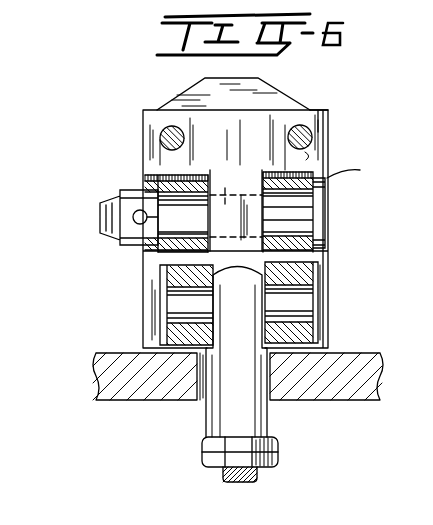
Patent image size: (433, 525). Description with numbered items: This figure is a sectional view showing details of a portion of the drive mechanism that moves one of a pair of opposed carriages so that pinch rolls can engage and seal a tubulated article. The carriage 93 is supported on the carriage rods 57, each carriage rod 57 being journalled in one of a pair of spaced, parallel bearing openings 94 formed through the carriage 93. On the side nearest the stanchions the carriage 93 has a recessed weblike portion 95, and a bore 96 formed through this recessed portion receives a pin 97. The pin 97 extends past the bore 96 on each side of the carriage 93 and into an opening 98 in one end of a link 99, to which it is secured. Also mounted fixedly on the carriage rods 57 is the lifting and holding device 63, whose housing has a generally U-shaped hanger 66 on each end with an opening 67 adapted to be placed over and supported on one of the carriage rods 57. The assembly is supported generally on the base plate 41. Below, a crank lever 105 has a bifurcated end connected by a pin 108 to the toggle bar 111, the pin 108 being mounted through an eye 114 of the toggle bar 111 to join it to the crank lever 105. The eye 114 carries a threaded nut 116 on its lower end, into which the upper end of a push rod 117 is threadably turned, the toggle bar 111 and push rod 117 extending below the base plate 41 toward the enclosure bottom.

The base plate 41 is at (352, 385).
The carriage rod 57 is at (312, 138).
The lifting and holding device 63 is at (293, 97).
The U-shaped hanger 66 is at (138, 140).
The opening 67 is at (163, 127).
The carriage 93 is at (331, 104).
The bearing opening 94 is at (327, 161).
The recessed weblike portion 95 is at (360, 170).
The bore 96 is at (230, 200).
The pin 97 is at (303, 207).
The opening 98 is at (325, 223).
The link 99 is at (143, 176).
The crank lever 105 is at (324, 328).
The pin 108 is at (172, 298).
The toggle bar 111 is at (280, 450).
The eye 114 is at (213, 398).
The threaded nut 116 is at (203, 450).
The push rod 117 is at (225, 479).